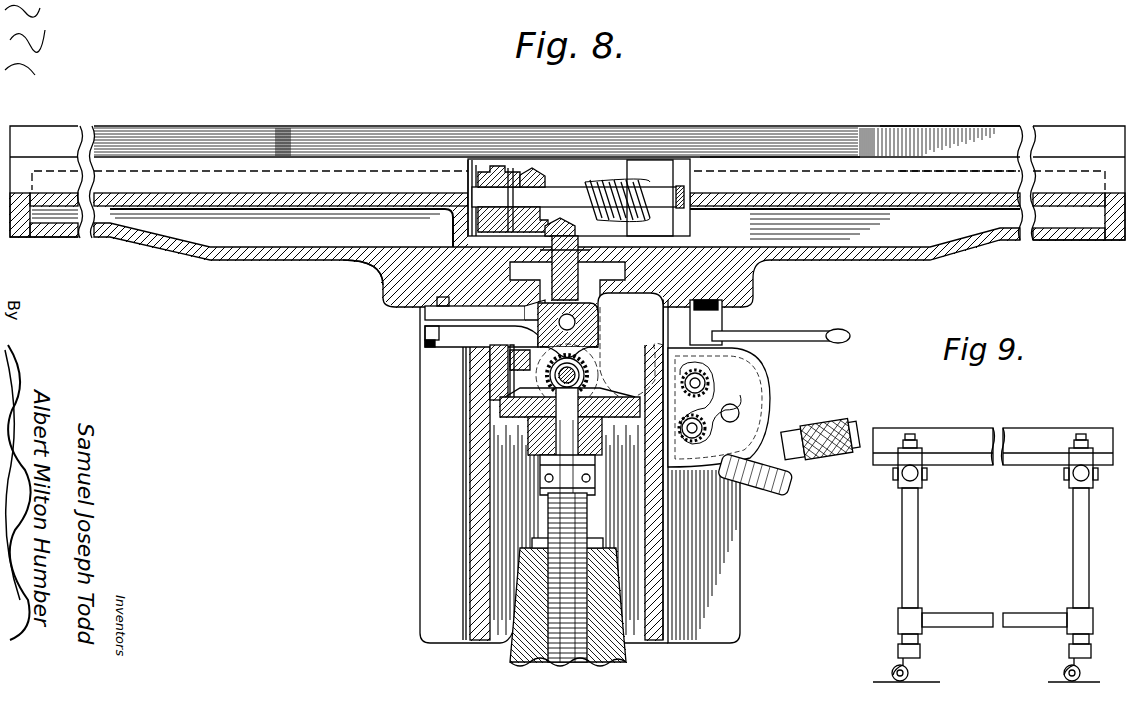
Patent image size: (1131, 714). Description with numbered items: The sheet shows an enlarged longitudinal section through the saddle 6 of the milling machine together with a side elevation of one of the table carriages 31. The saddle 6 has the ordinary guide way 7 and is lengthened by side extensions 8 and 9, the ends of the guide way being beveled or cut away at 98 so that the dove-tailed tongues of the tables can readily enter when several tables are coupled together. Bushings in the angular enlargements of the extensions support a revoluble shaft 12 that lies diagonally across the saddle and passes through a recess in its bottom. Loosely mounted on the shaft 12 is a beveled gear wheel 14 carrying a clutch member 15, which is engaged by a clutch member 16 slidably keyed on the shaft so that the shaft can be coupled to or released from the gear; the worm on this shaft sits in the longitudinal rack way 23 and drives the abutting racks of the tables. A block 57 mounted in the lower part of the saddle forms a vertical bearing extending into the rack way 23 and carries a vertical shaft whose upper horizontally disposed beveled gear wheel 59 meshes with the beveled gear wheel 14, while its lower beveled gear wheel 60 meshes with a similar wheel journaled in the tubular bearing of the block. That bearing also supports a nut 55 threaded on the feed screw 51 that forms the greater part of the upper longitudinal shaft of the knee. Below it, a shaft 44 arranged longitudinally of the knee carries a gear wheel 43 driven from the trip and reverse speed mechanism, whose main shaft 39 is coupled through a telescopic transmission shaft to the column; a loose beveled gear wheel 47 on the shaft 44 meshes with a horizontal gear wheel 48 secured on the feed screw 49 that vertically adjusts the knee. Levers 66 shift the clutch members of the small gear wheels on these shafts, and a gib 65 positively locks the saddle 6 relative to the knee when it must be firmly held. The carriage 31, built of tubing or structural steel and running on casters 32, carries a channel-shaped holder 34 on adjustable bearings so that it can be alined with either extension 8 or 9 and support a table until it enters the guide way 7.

In FIG. 8, the side extension 8 is at (145, 130).
In FIG. 8, the clutch member 16 is at (480, 158).
In FIG. 8, the clutch member 15 is at (517, 167).
In FIG. 8, the beveled gear wheel 14 is at (540, 170).
In FIG. 8, the beveled gear wheel 59 is at (568, 228).
In FIG. 8, the revoluble shaft 12 is at (664, 190).
In FIG. 8, the guide way 7 is at (815, 145).
In FIG. 8, the beveled ends of guide way 98 is at (890, 110).
In FIG. 8, the side extension 9 is at (937, 133).
In FIG. 8, the longitudinal rack way 23 is at (957, 175).
In FIG. 8, the beveled gear wheel 60 is at (630, 273).
In FIG. 8, the saddle 6 is at (343, 262).
In FIG. 8, the block 57 is at (420, 296).
In FIG. 8, the levers 66 is at (455, 332).
In FIG. 8, the feed screw 51 is at (520, 352).
In FIG. 8, the gear wheel 43 is at (500, 390).
In FIG. 8, the gear wheel 48 is at (485, 420).
In FIG. 8, the beveled gear wheel 47 is at (532, 452).
In FIG. 8, the feed screw 49 is at (550, 520).
In FIG. 8, the nut 55 is at (592, 330).
In FIG. 8, the shaft 44 is at (587, 372).
In FIG. 8, the main shaft 39 is at (733, 411).
In FIG. 8, the gib 65 is at (756, 290).
In FIG. 9, the carriage 31 is at (1062, 467).
In FIG. 9, the channel-shaped holder 34 is at (977, 468).
In FIG. 9, the casters 32 is at (893, 668).